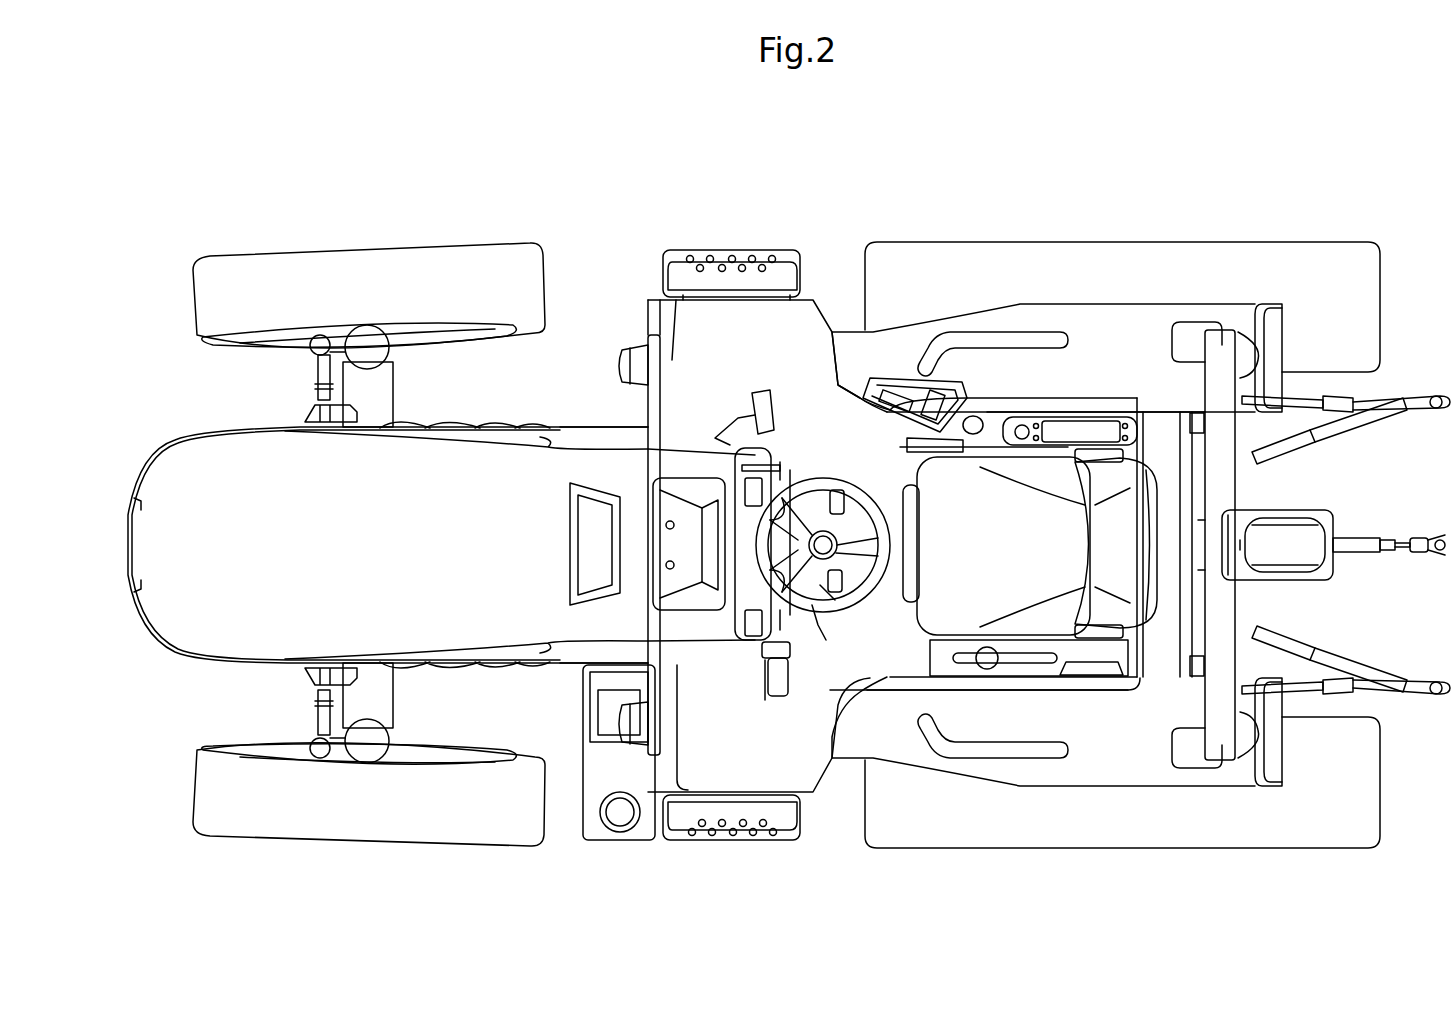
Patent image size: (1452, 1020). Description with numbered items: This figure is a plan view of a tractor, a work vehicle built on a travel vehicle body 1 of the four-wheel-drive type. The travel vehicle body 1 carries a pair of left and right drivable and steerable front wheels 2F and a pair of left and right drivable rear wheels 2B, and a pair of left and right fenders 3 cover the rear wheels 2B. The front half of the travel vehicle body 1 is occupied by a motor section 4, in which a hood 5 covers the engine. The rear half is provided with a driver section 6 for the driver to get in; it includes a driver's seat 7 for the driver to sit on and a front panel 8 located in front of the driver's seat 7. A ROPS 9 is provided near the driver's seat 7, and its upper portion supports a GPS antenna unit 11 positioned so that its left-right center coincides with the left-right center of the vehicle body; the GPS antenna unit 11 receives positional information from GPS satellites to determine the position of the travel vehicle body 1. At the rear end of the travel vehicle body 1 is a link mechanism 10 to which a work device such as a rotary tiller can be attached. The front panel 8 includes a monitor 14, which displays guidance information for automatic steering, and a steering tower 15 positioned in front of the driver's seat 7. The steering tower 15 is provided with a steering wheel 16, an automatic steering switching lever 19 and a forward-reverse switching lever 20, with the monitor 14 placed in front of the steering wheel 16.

The travel vehicle body 1 is at (170, 683).
The front wheels 2F is at (388, 265).
The rear wheels 2B is at (1142, 245).
The fenders 3 is at (1035, 318).
The motor section 4 is at (575, 420).
The hood 5 is at (185, 465).
The driver section 6 is at (805, 428).
The driver's seat 7 is at (1150, 475).
The front panel 8 is at (710, 420).
The ROPS 9 is at (1228, 482).
The link mechanism 10 is at (1420, 525).
The GPS antenna unit 11 is at (1318, 535).
The monitor 14 is at (668, 498).
The steering tower 15 is at (835, 595).
The steering wheel 16 is at (848, 466).
The automatic steering switching lever 19 is at (780, 655).
The forward-reverse switching lever 20 is at (822, 620).